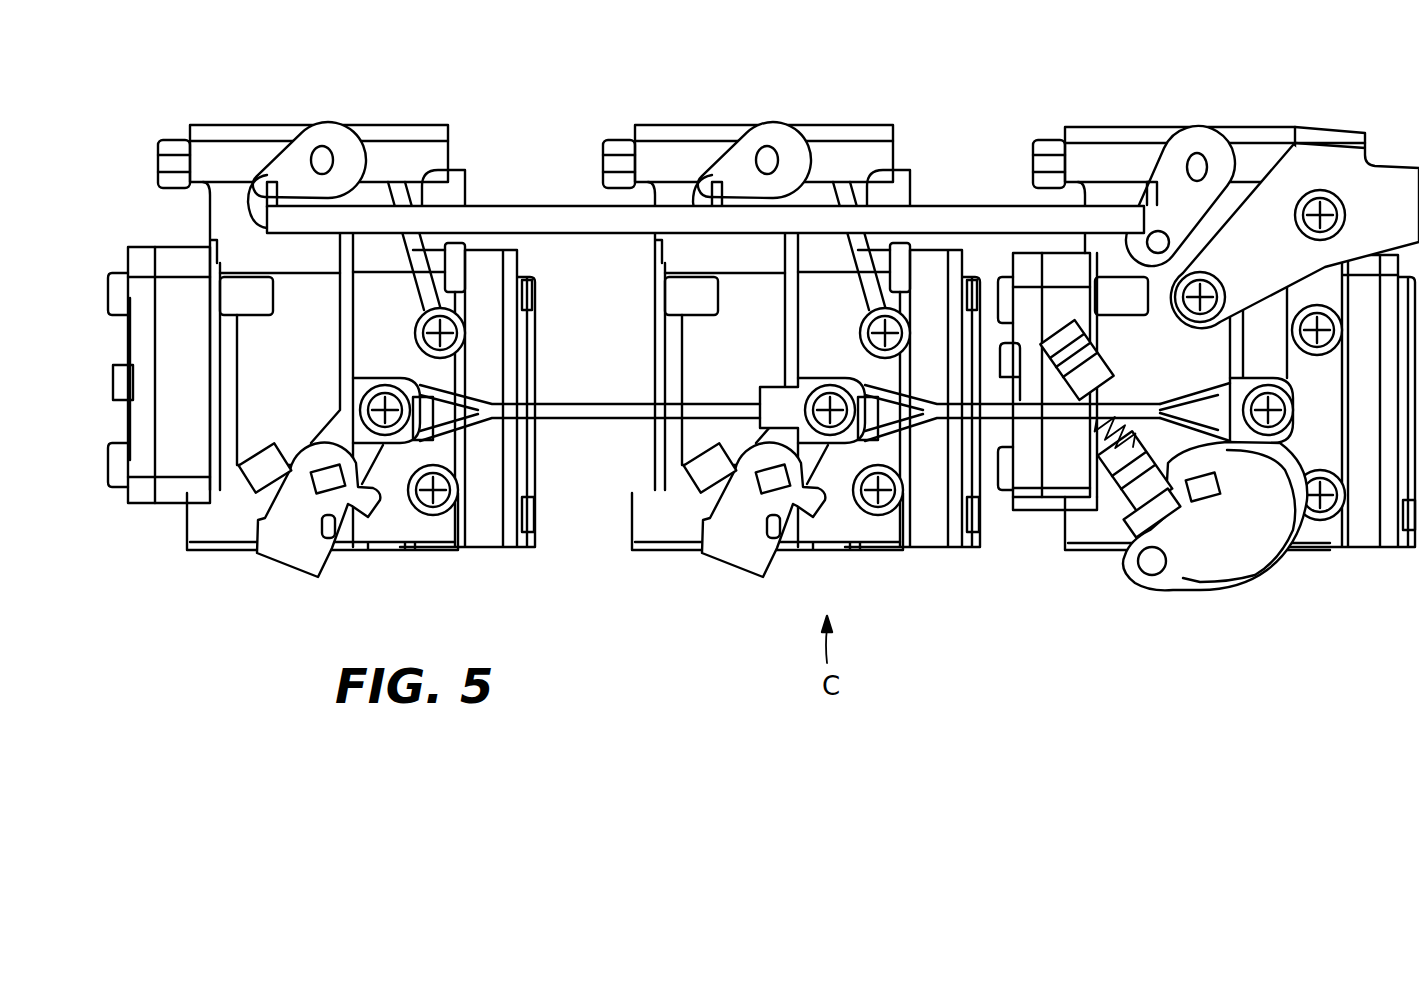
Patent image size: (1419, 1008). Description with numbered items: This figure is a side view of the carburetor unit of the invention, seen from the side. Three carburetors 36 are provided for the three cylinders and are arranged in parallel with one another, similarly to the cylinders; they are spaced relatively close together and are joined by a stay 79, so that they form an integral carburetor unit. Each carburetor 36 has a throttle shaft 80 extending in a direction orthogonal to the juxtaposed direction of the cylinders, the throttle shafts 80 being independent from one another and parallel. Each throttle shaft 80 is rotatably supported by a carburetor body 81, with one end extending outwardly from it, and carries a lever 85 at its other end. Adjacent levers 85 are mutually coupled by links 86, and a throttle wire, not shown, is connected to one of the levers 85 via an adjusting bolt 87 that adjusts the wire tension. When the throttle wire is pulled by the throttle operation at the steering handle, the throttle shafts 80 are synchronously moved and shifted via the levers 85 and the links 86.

The carburetor 36 is at (405, 125).
The stay 79 is at (540, 206).
The throttle shaft 80 is at (326, 486).
The carburetor body 81 is at (470, 183).
The lever 85 is at (593, 424).
The link 86 is at (1060, 422).
The adjusting bolt 87 is at (1102, 393).